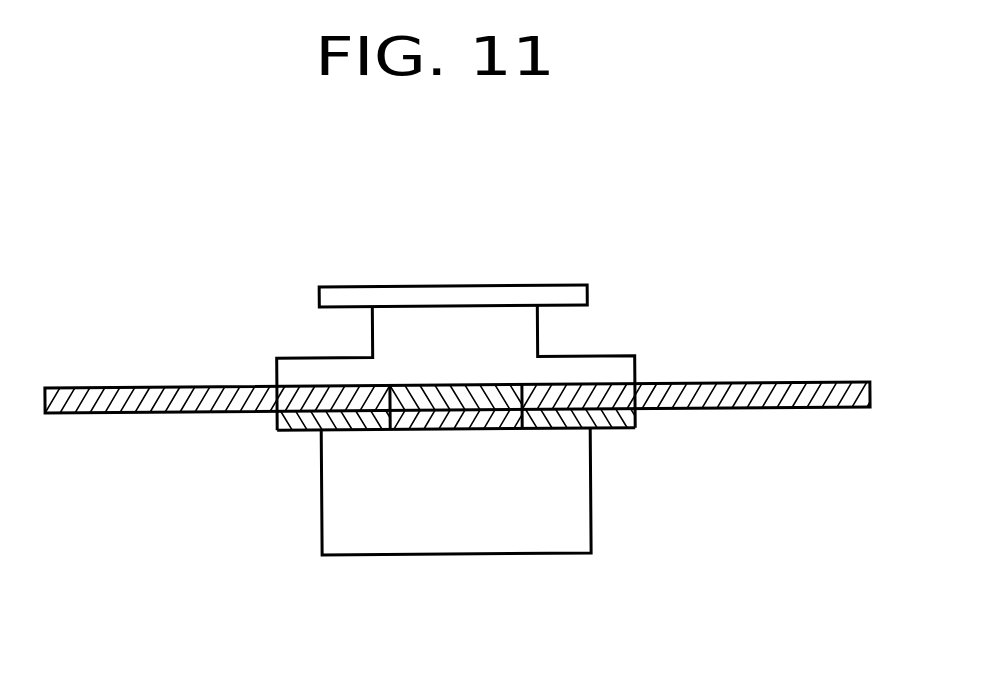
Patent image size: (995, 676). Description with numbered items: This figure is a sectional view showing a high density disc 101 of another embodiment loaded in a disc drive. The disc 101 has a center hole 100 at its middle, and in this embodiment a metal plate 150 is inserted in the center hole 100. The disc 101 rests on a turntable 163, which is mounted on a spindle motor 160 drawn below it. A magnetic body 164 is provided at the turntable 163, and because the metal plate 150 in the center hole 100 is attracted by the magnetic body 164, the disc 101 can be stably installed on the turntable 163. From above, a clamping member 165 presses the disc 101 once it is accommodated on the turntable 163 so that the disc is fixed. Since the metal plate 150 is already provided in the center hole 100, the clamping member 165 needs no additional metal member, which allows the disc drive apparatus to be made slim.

The high density disc 101 is at (780, 385).
The center hole 100 is at (512, 393).
The metal plate 150 is at (414, 385).
The clamping member 165 is at (467, 320).
The turntable 163 is at (630, 429).
The magnetic body 164 is at (488, 429).
The spindle motor 160 is at (528, 535).